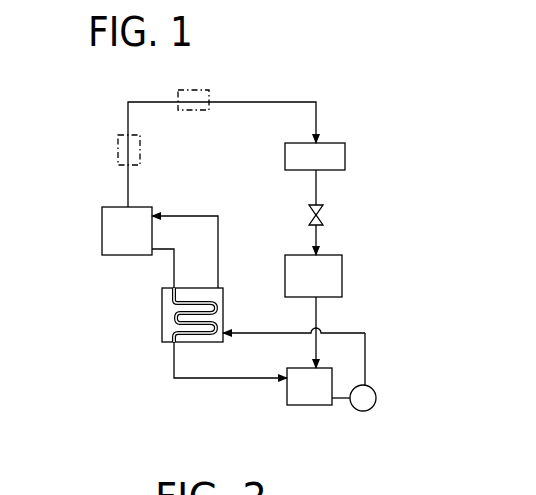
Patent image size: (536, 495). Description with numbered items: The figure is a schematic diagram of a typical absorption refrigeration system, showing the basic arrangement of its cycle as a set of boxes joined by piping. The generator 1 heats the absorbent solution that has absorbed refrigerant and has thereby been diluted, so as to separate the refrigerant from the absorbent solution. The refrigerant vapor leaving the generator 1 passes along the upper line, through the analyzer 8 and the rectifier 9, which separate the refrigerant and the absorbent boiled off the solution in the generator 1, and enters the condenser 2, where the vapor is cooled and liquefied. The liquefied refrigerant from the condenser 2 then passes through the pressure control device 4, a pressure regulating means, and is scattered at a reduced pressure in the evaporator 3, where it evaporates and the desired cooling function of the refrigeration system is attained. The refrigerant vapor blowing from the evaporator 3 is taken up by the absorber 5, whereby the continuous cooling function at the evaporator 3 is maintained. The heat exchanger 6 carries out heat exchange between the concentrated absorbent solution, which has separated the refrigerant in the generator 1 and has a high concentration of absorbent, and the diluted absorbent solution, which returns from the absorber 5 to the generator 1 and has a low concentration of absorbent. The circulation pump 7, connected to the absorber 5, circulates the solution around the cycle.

The generator 1 is at (102, 232).
The condenser 2 is at (345, 152).
The evaporator 3 is at (342, 273).
The pressure control device 4 is at (323, 215).
The absorber 5 is at (310, 405).
The heat exchanger 6 is at (162, 312).
The circulation pump 7 is at (376, 393).
The analyzer 8 is at (118, 147).
The rectifier 9 is at (205, 90).